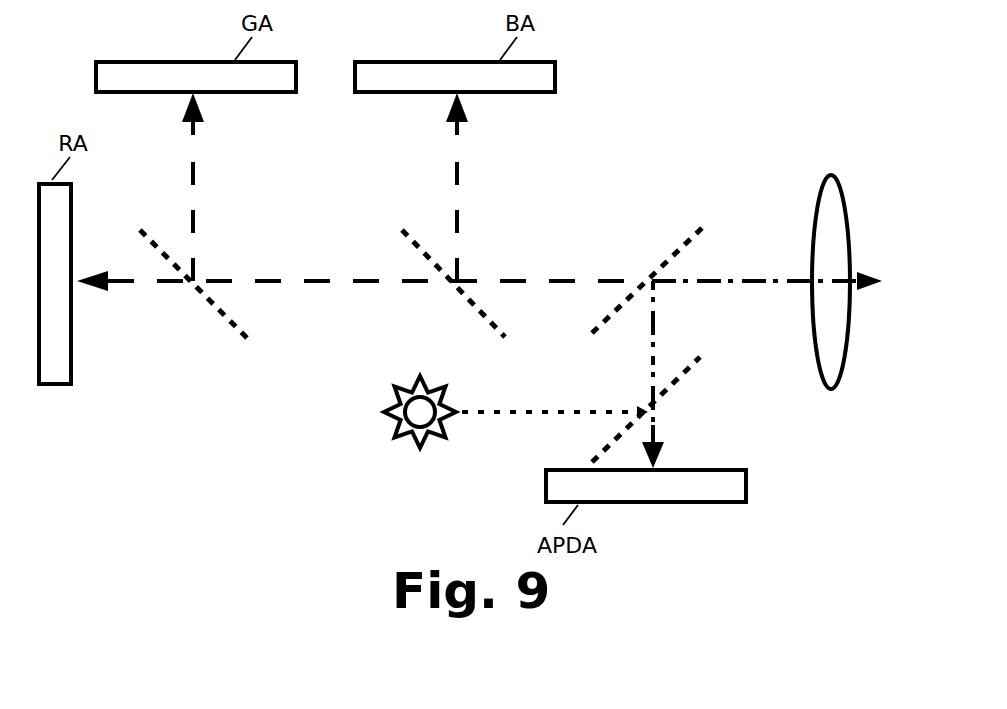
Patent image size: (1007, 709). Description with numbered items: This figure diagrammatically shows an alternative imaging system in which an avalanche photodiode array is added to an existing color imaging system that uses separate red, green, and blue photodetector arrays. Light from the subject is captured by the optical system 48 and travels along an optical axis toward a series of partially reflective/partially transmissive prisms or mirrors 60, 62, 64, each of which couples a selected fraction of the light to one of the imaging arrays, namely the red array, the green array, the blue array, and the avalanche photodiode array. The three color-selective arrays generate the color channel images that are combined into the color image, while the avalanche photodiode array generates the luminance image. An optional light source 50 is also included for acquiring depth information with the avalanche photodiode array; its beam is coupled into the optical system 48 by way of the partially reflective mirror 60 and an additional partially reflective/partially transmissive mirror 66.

The optical system 48 is at (818, 207).
The light source 50 is at (443, 388).
The partially reflective mirror 60 is at (687, 245).
The partially reflective/partially transmissive mirror 62 is at (418, 247).
The partially reflective/partially transmissive mirror 64 is at (157, 248).
The additional partially reflective/partially transmissive mirror 66 is at (682, 373).